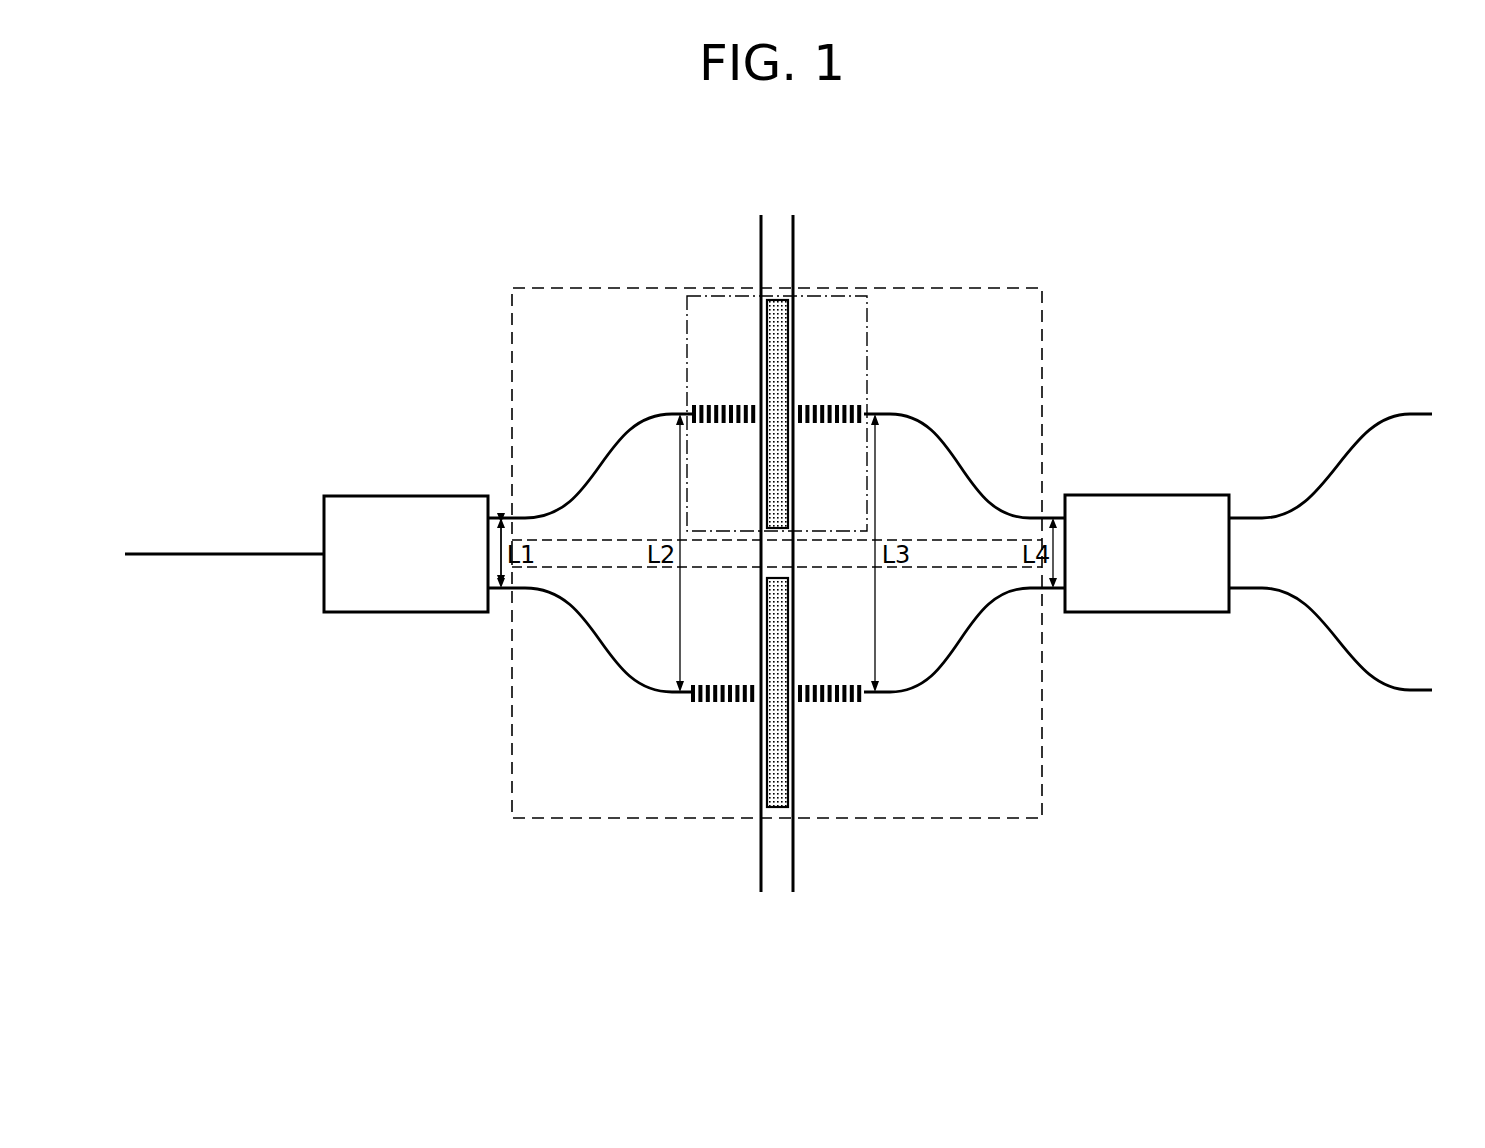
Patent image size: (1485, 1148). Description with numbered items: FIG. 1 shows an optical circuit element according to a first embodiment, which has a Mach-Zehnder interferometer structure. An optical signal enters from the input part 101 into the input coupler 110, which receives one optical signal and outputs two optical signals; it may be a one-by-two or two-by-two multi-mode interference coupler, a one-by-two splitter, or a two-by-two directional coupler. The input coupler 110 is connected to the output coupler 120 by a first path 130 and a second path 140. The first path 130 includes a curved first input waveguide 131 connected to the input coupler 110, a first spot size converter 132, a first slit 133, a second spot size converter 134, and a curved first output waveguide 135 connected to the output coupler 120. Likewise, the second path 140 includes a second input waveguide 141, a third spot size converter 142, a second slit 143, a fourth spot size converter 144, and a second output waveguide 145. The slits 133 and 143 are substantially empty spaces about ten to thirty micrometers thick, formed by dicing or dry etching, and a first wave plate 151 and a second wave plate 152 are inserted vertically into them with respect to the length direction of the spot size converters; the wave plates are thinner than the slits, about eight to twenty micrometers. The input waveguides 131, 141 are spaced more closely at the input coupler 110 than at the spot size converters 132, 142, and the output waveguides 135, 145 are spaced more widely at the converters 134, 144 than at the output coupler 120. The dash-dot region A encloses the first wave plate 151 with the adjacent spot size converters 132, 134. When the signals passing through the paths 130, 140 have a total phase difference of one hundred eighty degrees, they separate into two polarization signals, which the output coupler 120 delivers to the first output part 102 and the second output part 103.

The input part 101 is at (220, 552).
The first output part 102 is at (1410, 412).
The second output part 103 is at (1410, 692).
The input coupler 110 is at (378, 494).
The output coupler 120 is at (1177, 493).
The first path 130 is at (975, 288).
The second path 140 is at (975, 818).
The first input waveguide 131 is at (615, 438).
The first spot size converter 132 is at (737, 405).
The first slit 133 is at (777, 236).
The second spot size converter 134 is at (817, 405).
The first output waveguide 135 is at (940, 438).
The second input waveguide 141 is at (615, 667).
The third spot size converter 142 is at (728, 703).
The second slit 143 is at (778, 875).
The fourth spot size converter 144 is at (825, 703).
The second output waveguide 145 is at (940, 663).
The first wave plate 151 is at (778, 482).
The second wave plate 152 is at (778, 617).
The region A is at (867, 327).